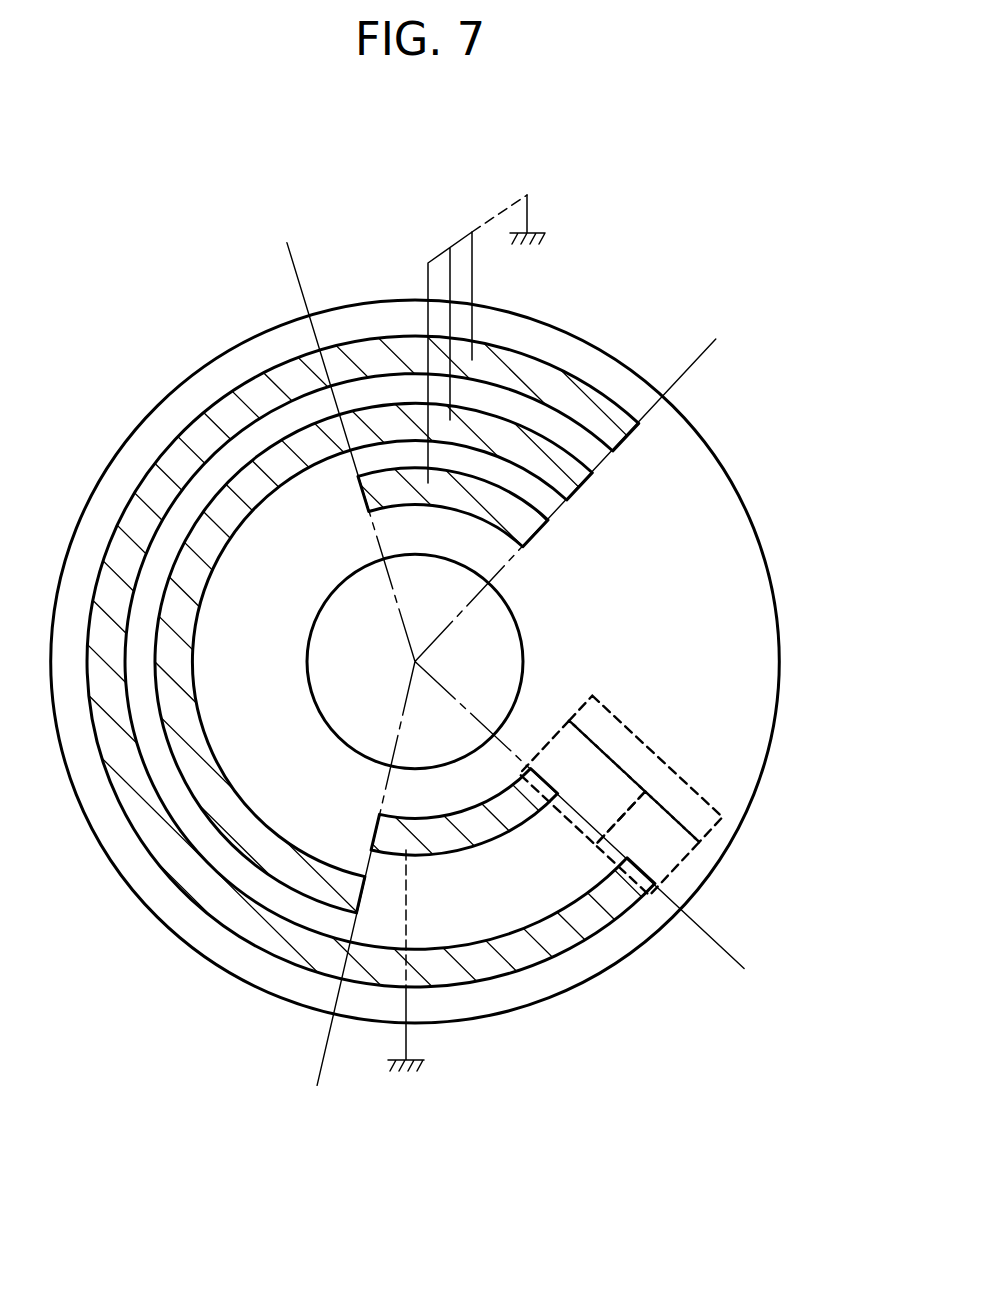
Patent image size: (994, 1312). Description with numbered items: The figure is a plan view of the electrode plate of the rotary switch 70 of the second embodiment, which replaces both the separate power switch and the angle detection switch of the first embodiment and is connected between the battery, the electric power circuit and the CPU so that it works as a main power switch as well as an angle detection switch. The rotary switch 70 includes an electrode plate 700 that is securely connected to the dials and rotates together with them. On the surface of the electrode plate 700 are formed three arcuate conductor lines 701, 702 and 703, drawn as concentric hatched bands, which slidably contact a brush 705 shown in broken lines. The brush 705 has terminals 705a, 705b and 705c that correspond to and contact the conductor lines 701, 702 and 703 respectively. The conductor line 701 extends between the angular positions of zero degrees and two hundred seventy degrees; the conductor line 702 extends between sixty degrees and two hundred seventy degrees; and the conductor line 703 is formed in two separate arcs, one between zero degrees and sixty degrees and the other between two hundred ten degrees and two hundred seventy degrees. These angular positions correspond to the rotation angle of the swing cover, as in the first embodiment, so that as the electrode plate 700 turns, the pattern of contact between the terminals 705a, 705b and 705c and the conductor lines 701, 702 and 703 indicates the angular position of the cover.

The rotary switch 70 is at (497, 664).
The electrode plate 700 is at (579, 335).
The conductor line 701 is at (480, 988).
The conductor line 702 is at (192, 639).
The conductor line 703 is at (438, 504).
The brush 705 is at (638, 765).
The terminal 705a is at (683, 857).
The terminal 705b is at (587, 840).
The terminal 705c is at (566, 722).